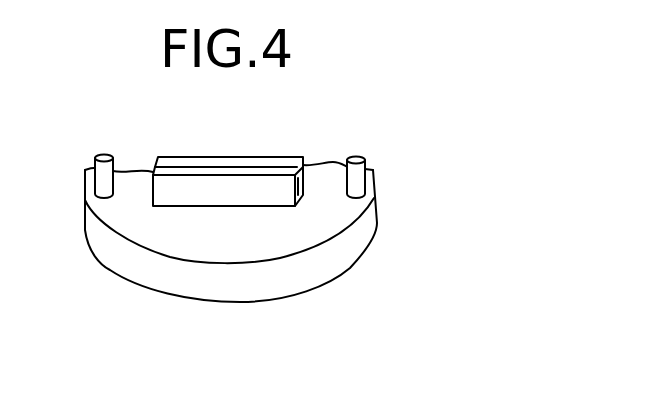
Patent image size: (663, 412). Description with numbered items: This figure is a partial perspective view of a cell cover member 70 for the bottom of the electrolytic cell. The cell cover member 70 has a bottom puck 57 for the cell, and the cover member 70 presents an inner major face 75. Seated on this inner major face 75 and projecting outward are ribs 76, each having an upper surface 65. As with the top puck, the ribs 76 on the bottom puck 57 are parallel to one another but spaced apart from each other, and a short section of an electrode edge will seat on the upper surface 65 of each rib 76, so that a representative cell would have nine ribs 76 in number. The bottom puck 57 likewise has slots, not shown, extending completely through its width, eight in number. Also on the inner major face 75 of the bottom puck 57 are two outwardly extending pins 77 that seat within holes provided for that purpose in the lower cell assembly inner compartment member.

The cell cover member 70 is at (463, 180).
The bottom puck 57 is at (153, 275).
The inner major face 75 is at (120, 208).
The upper surface 65 is at (250, 156).
The ribs 76 is at (277, 187).
The pins 77 is at (366, 174).